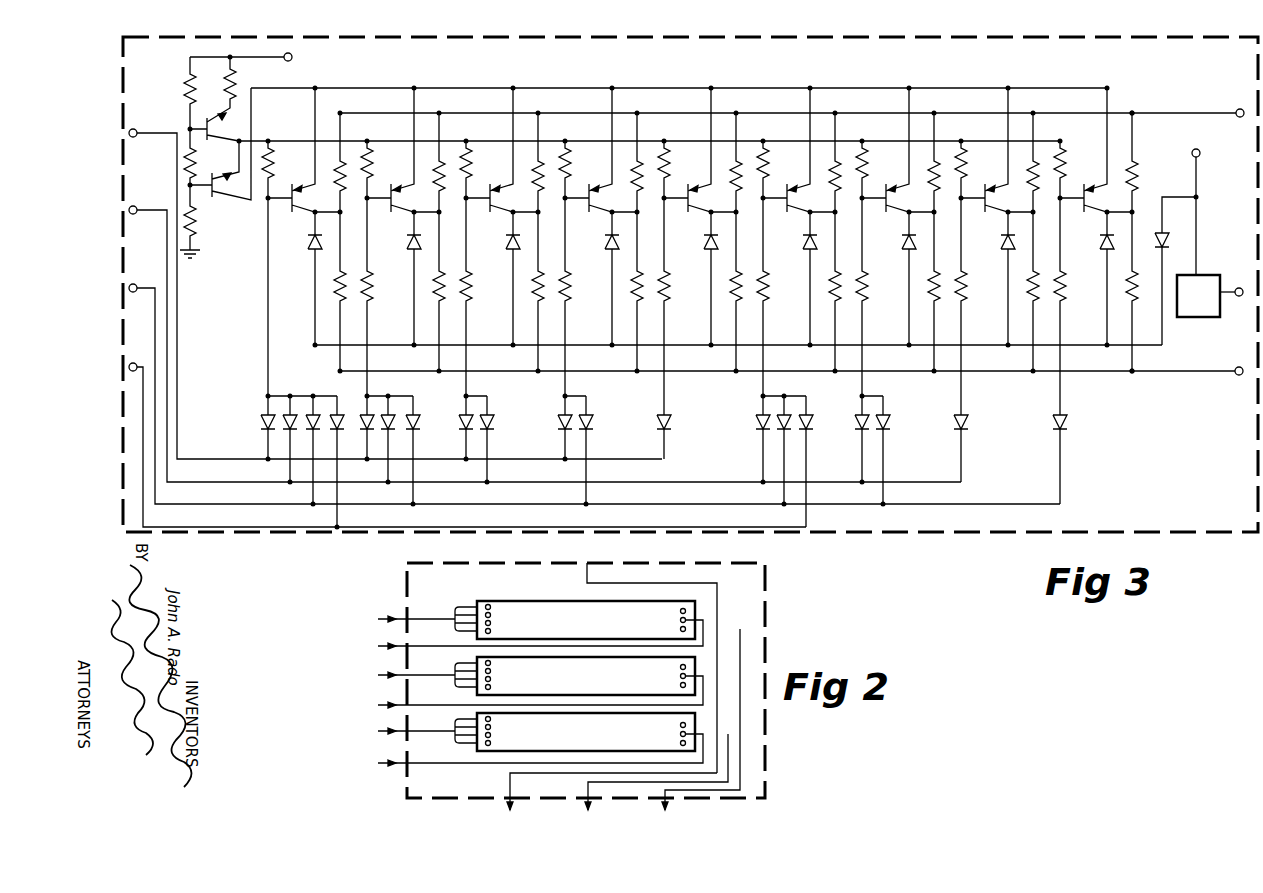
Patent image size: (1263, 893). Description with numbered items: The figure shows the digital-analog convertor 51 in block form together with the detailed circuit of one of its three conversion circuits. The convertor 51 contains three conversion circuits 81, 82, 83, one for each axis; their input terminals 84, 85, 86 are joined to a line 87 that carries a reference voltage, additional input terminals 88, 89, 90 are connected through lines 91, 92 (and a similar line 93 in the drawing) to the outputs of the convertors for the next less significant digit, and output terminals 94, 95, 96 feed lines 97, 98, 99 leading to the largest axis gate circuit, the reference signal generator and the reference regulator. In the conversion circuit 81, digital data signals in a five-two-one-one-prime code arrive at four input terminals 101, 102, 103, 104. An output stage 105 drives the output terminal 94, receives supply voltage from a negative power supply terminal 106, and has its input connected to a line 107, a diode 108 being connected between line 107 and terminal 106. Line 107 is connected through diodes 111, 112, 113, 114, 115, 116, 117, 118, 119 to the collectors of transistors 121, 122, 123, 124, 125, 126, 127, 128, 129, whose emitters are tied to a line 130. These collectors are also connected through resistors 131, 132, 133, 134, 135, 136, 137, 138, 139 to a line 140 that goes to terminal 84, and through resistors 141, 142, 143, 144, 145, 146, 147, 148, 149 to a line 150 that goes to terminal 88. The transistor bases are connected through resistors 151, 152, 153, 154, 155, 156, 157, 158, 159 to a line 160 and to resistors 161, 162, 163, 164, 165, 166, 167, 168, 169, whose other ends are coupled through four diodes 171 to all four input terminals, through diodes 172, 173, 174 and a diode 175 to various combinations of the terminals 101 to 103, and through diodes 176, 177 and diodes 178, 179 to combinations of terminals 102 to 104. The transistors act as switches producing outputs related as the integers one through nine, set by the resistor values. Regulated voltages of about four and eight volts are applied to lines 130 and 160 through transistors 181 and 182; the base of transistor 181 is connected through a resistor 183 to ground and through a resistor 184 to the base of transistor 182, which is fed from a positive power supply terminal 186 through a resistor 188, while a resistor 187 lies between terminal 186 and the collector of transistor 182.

In FIG. 2, the digital-analog convertor 51 is at (768, 567).
In FIG. 3, the conversion circuit 81 is at (930, 540).
In FIG. 2, the conversion circuit 81 is at (484, 600).
In FIG. 2, the conversion circuit 82 is at (479, 662).
In FIG. 2, the conversion circuit 83 is at (479, 718).
In FIG. 3, the input terminal 84 is at (1240, 108).
In FIG. 2, the input terminal 84 is at (686, 611).
In FIG. 2, the input terminal 85 is at (686, 667).
In FIG. 2, the input terminal 86 is at (686, 725).
In FIG. 2, the line 87 is at (588, 556).
In FIG. 3, the input terminal 88 is at (1240, 366).
In FIG. 2, the input terminal 88 is at (686, 629).
In FIG. 2, the input terminal 89 is at (686, 685).
In FIG. 2, the input terminal 90 is at (686, 743).
In FIG. 2, the line 91 is at (417, 646).
In FIG. 2, the line 92 is at (420, 705).
In FIG. 2, the input lead 93 is at (418, 763).
In FIG. 3, the output terminal 94 is at (1240, 288).
In FIG. 2, the output terminal 94 is at (686, 620).
In FIG. 2, the output terminal 95 is at (686, 676).
In FIG. 2, the output terminal 96 is at (686, 734).
In FIG. 2, the line 97 is at (509, 786).
In FIG. 2, the line 98 is at (587, 794).
In FIG. 2, the line 99 is at (664, 797).
In FIG. 3, the input terminal 101 is at (136, 129).
In FIG. 3, the input terminal 102 is at (136, 206).
In FIG. 3, the input terminal 103 is at (136, 284).
In FIG. 3, the input terminal 104 is at (144, 357).
In FIG. 3, the output stage 105 is at (1180, 318).
In FIG. 3, the negative power supply terminal 106 is at (1198, 148).
In FIG. 3, the line 107 is at (975, 350).
In FIG. 3, the diode 108 is at (1165, 240).
In FIG. 3, the diode 111 is at (307, 243).
In FIG. 3, the diode 112 is at (406, 243).
In FIG. 3, the diode 113 is at (505, 243).
In FIG. 3, the diode 114 is at (604, 243).
In FIG. 3, the diode 115 is at (703, 243).
In FIG. 3, the diode 116 is at (802, 243).
In FIG. 3, the diode 117 is at (901, 243).
In FIG. 3, the diode 118 is at (1000, 243).
In FIG. 3, the diode 119 is at (1099, 243).
In FIG. 3, the transistor 121 is at (295, 203).
In FIG. 3, the transistor 122 is at (394, 203).
In FIG. 3, the transistor 123 is at (493, 203).
In FIG. 3, the transistor 124 is at (592, 203).
In FIG. 3, the transistor 125 is at (691, 203).
In FIG. 3, the transistor 126 is at (790, 203).
In FIG. 3, the transistor 127 is at (889, 203).
In FIG. 3, the transistor 128 is at (988, 203).
In FIG. 3, the transistor 129 is at (1087, 203).
In FIG. 3, the line 130 is at (1038, 88).
In FIG. 3, the resistor 131 is at (341, 190).
In FIG. 3, the resistor 132 is at (440, 190).
In FIG. 3, the resistor 133 is at (539, 190).
In FIG. 3, the resistor 134 is at (638, 190).
In FIG. 3, the resistor 135 is at (737, 190).
In FIG. 3, the resistor 136 is at (836, 190).
In FIG. 3, the resistor 137 is at (935, 190).
In FIG. 3, the resistor 138 is at (1034, 190).
In FIG. 3, the resistor 139 is at (1137, 165).
In FIG. 3, the line 140 is at (1050, 113).
In FIG. 3, the resistor 141 is at (342, 300).
In FIG. 3, the resistor 142 is at (441, 300).
In FIG. 3, the resistor 143 is at (540, 300).
In FIG. 3, the resistor 144 is at (639, 300).
In FIG. 3, the resistor 145 is at (738, 300).
In FIG. 3, the resistor 146 is at (837, 300).
In FIG. 3, the resistor 147 is at (936, 300).
In FIG. 3, the resistor 148 is at (1035, 300).
In FIG. 3, the resistor 149 is at (1134, 300).
In FIG. 3, the line 150 is at (1090, 375).
In FIG. 3, the resistor 151 is at (272, 165).
In FIG. 3, the resistor 152 is at (371, 165).
In FIG. 3, the resistor 153 is at (470, 165).
In FIG. 3, the resistor 154 is at (569, 165).
In FIG. 3, the resistor 155 is at (668, 165).
In FIG. 3, the resistor 156 is at (767, 165).
In FIG. 3, the resistor 157 is at (866, 165).
In FIG. 3, the resistor 158 is at (965, 165).
In FIG. 3, the resistor 159 is at (1064, 165).
In FIG. 3, the line 160 is at (1043, 141).
In FIG. 3, the resistor 161 is at (245, 297).
In FIG. 3, the resistor 162 is at (369, 300).
In FIG. 3, the resistor 163 is at (468, 300).
In FIG. 3, the resistor 164 is at (567, 300).
In FIG. 3, the resistor 165 is at (666, 300).
In FIG. 3, the resistor 166 is at (765, 300).
In FIG. 3, the resistor 167 is at (864, 300).
In FIG. 3, the resistor 168 is at (963, 300).
In FIG. 3, the resistor 169 is at (1062, 300).
In FIG. 3, the diodes 171 is at (274, 417).
In FIG. 3, the diodes 172 is at (373, 417).
In FIG. 3, the diodes 173 is at (472, 417).
In FIG. 3, the diodes 174 is at (571, 417).
In FIG. 3, the diode 175 is at (670, 417).
In FIG. 3, the diodes 176 is at (769, 417).
In FIG. 3, the diodes 177 is at (868, 417).
In FIG. 3, the diode 178 is at (967, 417).
In FIG. 3, the diode 179 is at (1066, 417).
In FIG. 3, the transistor 181 is at (216, 190).
In FIG. 3, the transistor 182 is at (212, 130).
In FIG. 3, the resistor 183 is at (196, 220).
In FIG. 3, the resistor 184 is at (196, 160).
In FIG. 3, the positive power supply terminal 186 is at (287, 61).
In FIG. 3, the resistor 187 is at (236, 77).
In FIG. 3, the resistor 188 is at (185, 82).